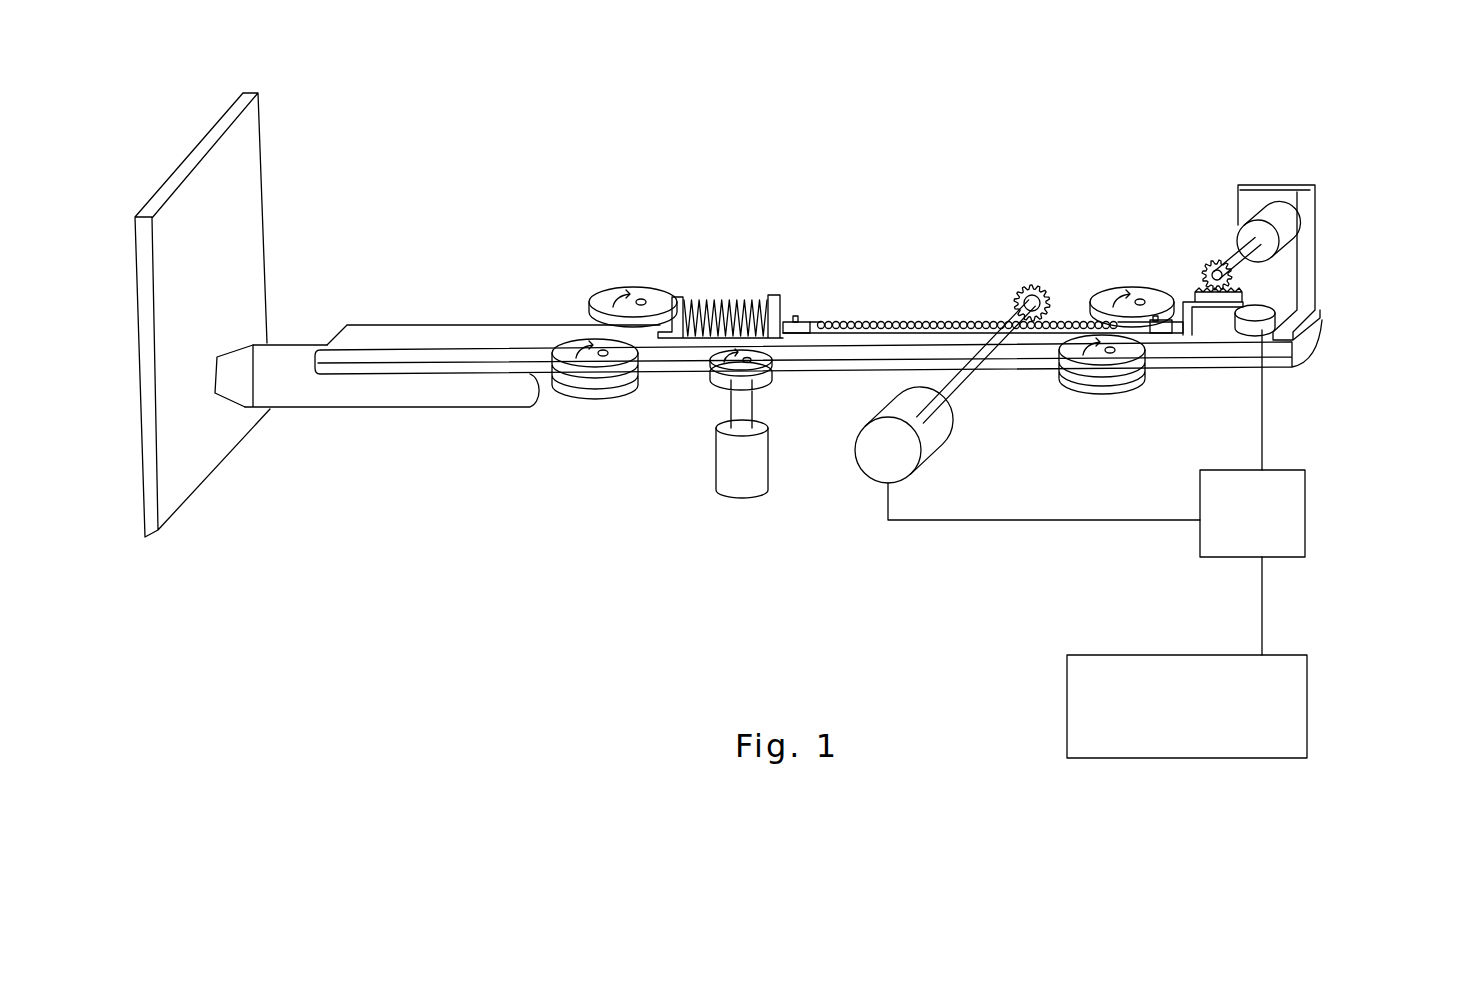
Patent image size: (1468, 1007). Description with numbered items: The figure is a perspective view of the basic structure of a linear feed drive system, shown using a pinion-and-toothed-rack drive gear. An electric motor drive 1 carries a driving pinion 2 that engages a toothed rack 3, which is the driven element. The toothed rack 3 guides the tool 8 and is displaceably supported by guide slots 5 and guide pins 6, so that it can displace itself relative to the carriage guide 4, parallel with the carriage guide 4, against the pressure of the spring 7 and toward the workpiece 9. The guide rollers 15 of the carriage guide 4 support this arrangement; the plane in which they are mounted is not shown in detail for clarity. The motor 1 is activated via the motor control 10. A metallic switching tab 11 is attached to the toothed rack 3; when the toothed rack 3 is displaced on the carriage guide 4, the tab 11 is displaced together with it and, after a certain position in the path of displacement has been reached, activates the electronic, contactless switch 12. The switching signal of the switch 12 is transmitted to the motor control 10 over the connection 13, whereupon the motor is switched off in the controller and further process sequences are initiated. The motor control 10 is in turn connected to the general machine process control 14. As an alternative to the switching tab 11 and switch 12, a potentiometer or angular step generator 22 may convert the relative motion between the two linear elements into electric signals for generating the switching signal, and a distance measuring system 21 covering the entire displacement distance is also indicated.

The electric motor drive 1 is at (868, 473).
The driving pinion 2 is at (1033, 282).
The toothed rack 3 is at (905, 317).
The carriage guide 4 is at (483, 368).
The guide slots 5 is at (803, 317).
The guide pins 6 is at (787, 317).
The spring 7 is at (722, 308).
The tool 8 is at (274, 384).
The workpiece 9 is at (230, 227).
The motor control 10 is at (1305, 496).
The metallic switching tab 11 is at (1208, 310).
The electronic contactless switch 12 is at (1293, 342).
The connection 13 is at (1262, 418).
The machine process control 14 is at (1307, 698).
The guide rollers 15 is at (633, 290).
The distance measuring system 21 is at (735, 484).
The angular step generator 22 is at (1273, 205).